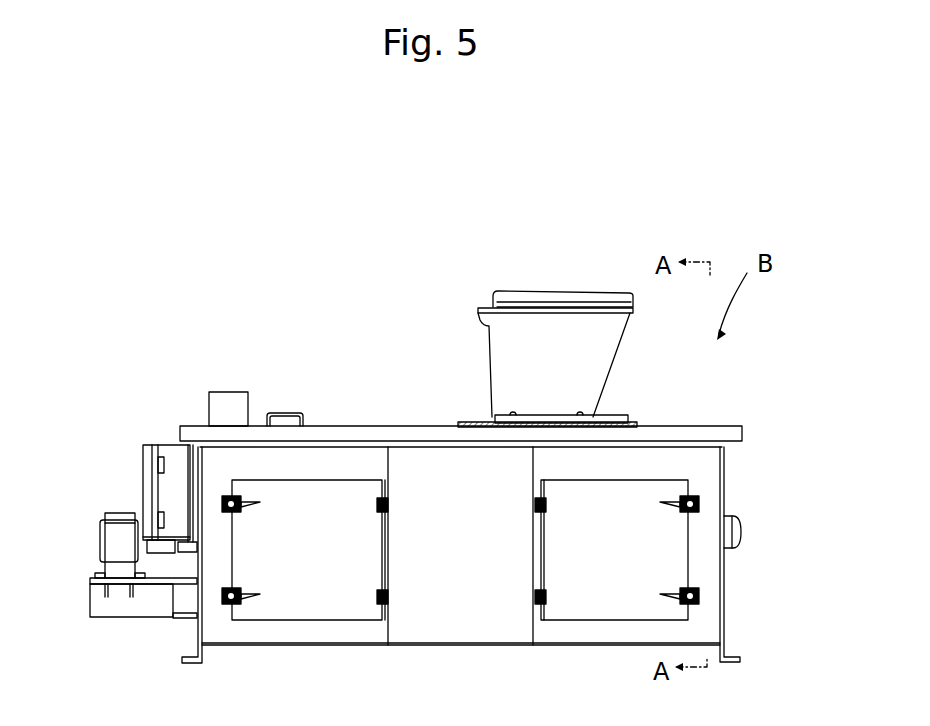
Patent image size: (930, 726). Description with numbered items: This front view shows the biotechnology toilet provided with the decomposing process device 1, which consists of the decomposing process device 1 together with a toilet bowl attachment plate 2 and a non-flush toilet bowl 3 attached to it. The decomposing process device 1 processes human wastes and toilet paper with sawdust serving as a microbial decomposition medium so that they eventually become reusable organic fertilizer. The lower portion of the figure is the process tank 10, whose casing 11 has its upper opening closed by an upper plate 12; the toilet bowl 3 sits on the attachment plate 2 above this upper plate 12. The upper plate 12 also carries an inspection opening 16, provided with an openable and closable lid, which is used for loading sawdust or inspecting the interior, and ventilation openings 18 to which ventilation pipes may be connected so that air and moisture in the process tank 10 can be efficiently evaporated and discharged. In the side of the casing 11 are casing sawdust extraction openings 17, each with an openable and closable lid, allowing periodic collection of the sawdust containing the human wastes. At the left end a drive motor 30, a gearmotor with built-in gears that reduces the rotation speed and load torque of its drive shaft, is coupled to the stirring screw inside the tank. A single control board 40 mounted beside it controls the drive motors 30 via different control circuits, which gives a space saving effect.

The decomposing process device 1 is at (700, 566).
The toilet bowl attachment plate 2 is at (610, 418).
The non-flush toilet bowl 3 is at (560, 330).
The process tank 10 is at (705, 585).
The casing 11 is at (707, 615).
The upper plate 12 is at (422, 426).
The inspection opening 16 is at (333, 426).
The casing sawdust extraction opening 17 is at (307, 605).
The ventilation opening 18 is at (223, 397).
The drive motor 30 is at (123, 537).
The control board 40 is at (178, 470).